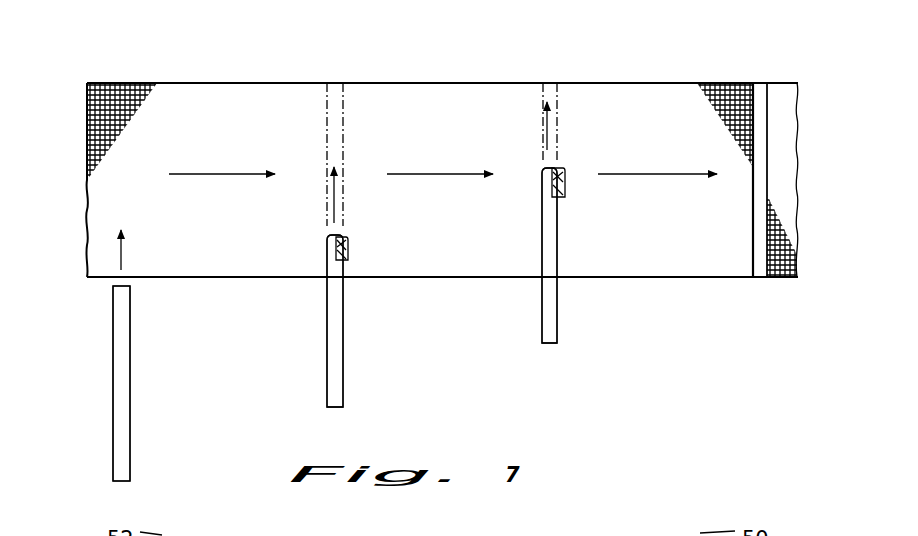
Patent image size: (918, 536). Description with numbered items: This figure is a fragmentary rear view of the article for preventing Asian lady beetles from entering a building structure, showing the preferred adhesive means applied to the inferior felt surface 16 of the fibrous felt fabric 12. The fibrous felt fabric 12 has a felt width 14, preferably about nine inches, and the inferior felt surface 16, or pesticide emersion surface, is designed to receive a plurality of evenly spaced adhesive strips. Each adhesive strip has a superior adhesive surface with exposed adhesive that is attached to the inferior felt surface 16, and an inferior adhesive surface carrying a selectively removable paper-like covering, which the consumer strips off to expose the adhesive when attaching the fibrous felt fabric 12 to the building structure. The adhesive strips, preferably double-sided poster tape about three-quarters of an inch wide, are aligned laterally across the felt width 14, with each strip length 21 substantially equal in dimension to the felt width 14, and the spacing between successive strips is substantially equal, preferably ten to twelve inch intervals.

The fibrous felt fabric 12 is at (436, 68).
The felt width 14 is at (812, 80).
The inferior felt surface 16 is at (397, 105).
The strip length 21 is at (103, 286).